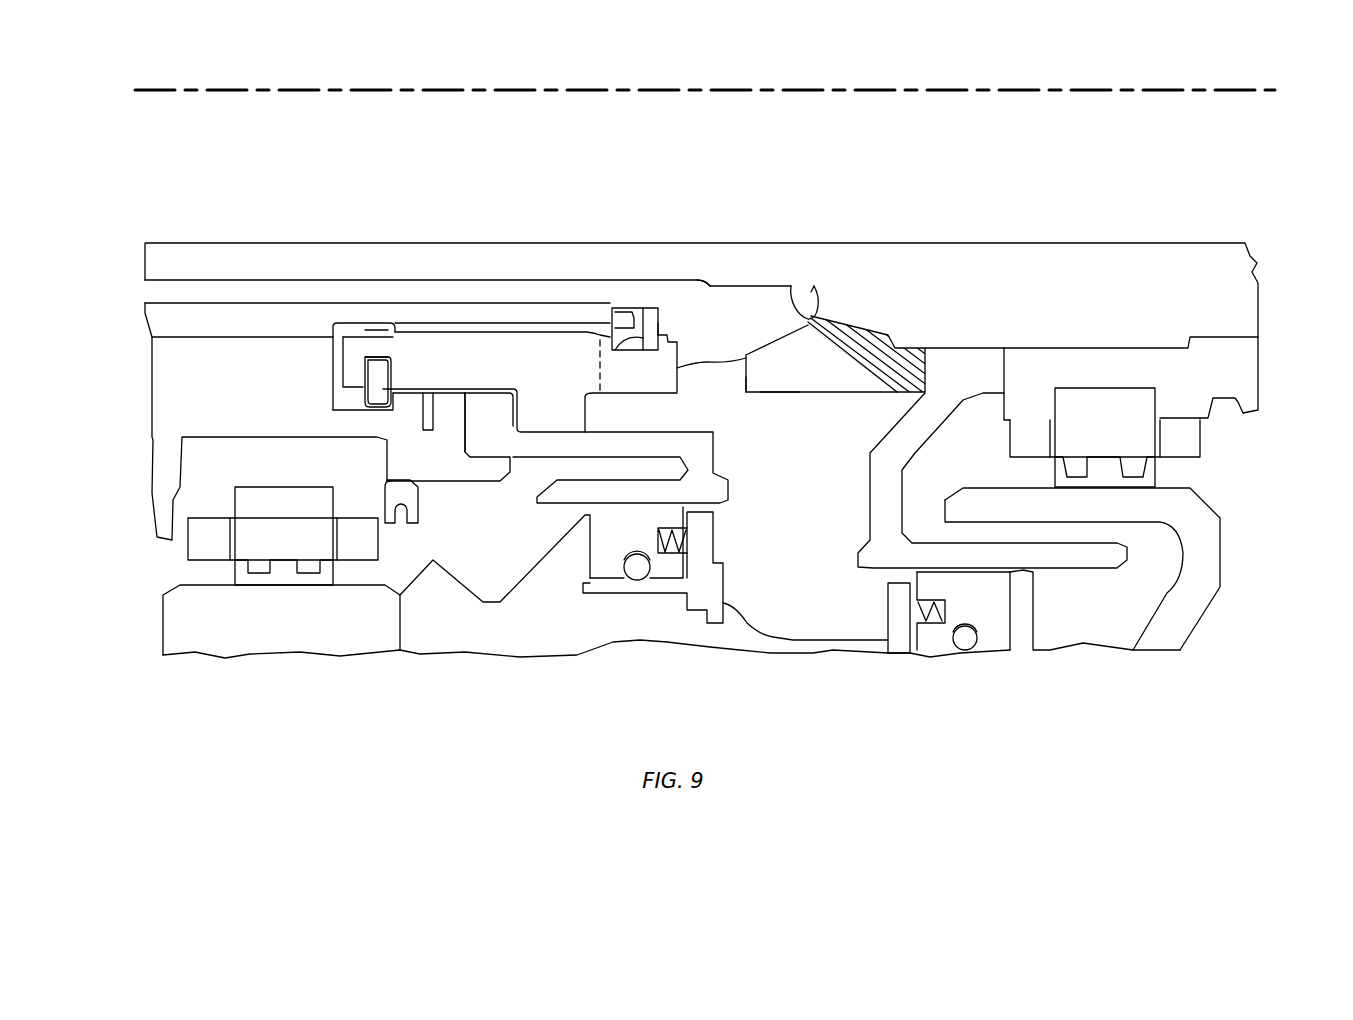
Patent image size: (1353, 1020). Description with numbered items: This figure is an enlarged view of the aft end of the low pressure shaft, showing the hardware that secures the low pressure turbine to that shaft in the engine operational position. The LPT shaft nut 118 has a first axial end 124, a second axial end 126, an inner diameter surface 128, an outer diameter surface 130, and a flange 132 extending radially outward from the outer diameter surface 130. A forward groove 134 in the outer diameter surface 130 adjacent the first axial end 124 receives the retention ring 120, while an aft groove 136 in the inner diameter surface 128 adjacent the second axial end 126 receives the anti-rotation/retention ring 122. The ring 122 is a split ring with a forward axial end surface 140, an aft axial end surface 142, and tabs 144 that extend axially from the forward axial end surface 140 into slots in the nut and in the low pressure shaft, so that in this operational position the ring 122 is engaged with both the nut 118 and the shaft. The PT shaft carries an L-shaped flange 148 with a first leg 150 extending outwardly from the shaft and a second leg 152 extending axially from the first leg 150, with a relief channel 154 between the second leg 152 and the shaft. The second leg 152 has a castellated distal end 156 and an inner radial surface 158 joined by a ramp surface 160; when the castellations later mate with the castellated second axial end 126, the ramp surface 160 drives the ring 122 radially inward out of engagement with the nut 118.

The LPT shaft nut 118 is at (507, 323).
The retention ring 120 is at (363, 390).
The anti-rotation/retention ring 122 is at (666, 314).
The first axial end 124 is at (333, 350).
The second axial end 126 is at (746, 368).
The inner diameter surface 128 is at (375, 328).
The outer diameter surface 130 is at (487, 393).
The flange 132 is at (552, 425).
The forward groove 134 is at (375, 353).
The aft groove 136 is at (652, 330).
The forward axial end surface 140 is at (637, 323).
The aft axial end surface 142 is at (660, 327).
The tabs 144 is at (630, 304).
The L-shaped flange 148 is at (827, 399).
The first leg 150 is at (883, 313).
The second leg 152 is at (785, 395).
The relief channel 154 is at (773, 302).
The distal end 156 is at (746, 377).
The inner radial surface 158 is at (812, 290).
The ramp surface 160 is at (803, 312).